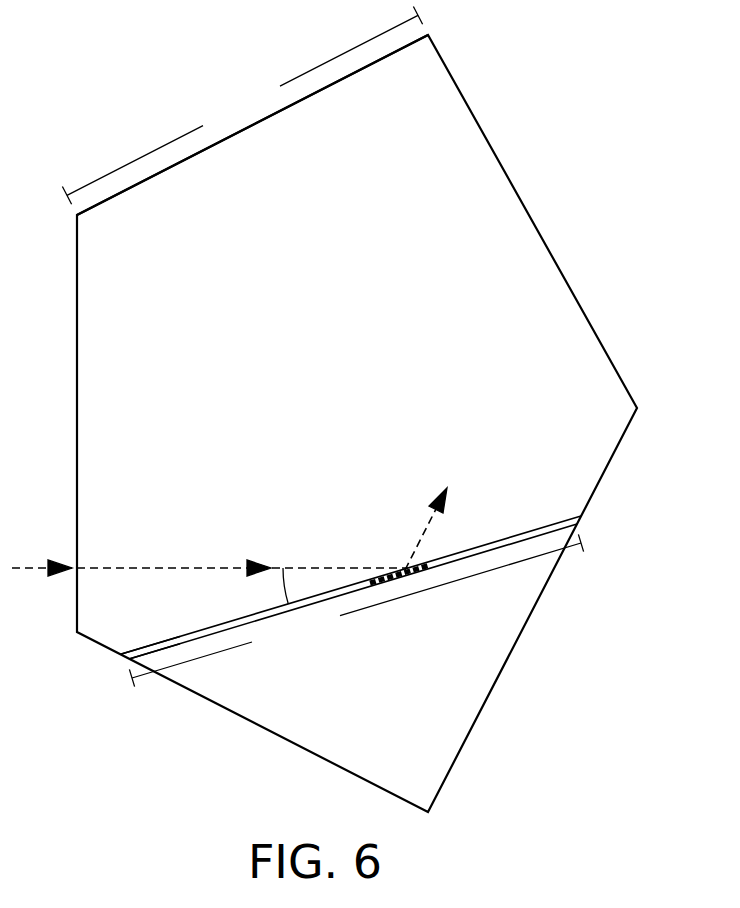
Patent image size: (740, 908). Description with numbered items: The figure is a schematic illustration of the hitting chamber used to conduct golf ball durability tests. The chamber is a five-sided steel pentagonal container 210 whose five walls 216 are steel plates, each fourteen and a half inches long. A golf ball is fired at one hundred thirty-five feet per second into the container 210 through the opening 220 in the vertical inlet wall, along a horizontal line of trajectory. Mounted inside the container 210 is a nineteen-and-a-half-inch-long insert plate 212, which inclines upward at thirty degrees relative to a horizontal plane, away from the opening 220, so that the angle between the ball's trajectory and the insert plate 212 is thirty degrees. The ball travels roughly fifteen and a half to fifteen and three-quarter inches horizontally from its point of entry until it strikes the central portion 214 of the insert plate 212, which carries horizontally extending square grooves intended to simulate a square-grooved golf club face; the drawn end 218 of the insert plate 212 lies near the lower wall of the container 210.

The container 210 is at (149, 90).
The insert plate 212 is at (527, 541).
The central portion 214 is at (425, 566).
The walls 216 is at (358, 70).
The lower end of strip 218 is at (123, 660).
The opening 220 is at (78, 567).